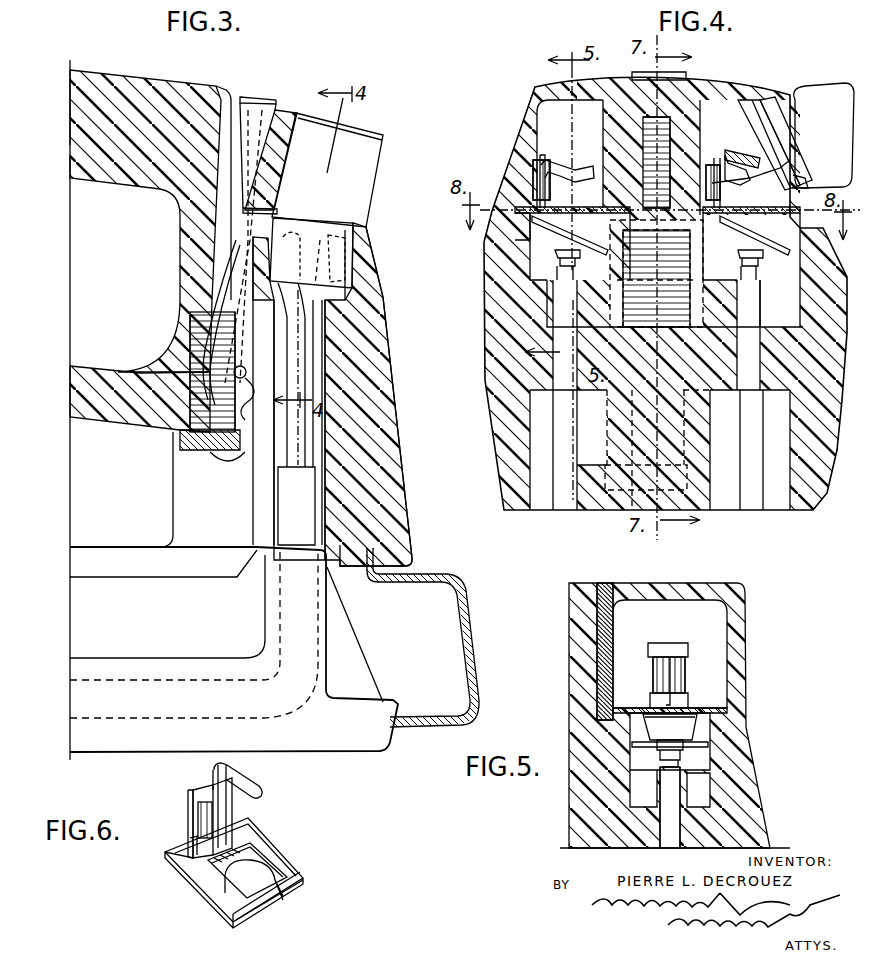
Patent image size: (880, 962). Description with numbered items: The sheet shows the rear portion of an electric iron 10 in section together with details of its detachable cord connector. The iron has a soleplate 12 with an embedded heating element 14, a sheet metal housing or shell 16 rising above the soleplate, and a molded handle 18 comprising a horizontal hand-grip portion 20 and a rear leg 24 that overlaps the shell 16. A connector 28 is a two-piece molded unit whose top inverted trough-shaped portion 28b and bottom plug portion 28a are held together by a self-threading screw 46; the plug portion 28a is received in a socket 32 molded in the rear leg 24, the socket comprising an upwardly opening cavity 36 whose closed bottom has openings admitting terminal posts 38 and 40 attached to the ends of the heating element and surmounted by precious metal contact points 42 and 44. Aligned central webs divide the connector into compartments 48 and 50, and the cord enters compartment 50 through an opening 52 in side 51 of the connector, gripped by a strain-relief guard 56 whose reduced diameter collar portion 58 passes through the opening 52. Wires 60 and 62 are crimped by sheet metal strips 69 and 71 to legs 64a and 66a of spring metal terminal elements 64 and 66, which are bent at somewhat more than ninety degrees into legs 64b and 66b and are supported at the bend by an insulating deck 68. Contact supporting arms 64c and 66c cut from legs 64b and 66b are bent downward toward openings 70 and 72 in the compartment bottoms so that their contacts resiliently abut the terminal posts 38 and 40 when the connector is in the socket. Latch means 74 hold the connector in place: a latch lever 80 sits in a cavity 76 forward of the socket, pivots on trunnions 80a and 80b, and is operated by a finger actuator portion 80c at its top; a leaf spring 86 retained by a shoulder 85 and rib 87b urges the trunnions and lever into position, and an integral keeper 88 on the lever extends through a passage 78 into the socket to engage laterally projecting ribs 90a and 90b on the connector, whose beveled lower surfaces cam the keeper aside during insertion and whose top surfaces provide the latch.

In FIG. 3, the electric iron 10 is at (152, 58).
In FIG. 4, the electric iron 10 is at (474, 379).
In FIG. 3, the soleplate 12 is at (98, 730).
In FIG. 3, the heating element 14 is at (163, 678).
In FIG. 3, the housing or shell 16 is at (462, 625).
In FIG. 3, the handle 18 is at (89, 70).
In FIG. 4, the handle 18 is at (490, 437).
In FIG. 5, the handle 18 is at (753, 772).
In FIG. 3, the hand-grip portion 20 is at (137, 176).
In FIG. 3, the rear leg 24 is at (385, 333).
In FIG. 3, the connector 28 is at (380, 137).
In FIG. 4, the connector 28 is at (738, 95).
In FIG. 5, the connector 28 is at (742, 645).
In FIG. 3, the plug portion 28a is at (345, 238).
In FIG. 4, the plug portion 28a is at (520, 306).
In FIG. 5, the plug portion 28a is at (625, 791).
In FIG. 3, the top inverted trough-shaped portion 28b is at (368, 180).
In FIG. 4, the top inverted trough-shaped portion 28b is at (530, 103).
In FIG. 5, the top inverted trough-shaped portion 28b is at (738, 595).
In FIG. 3, the socket 32 is at (303, 102).
In FIG. 5, the socket 32 is at (607, 592).
In FIG. 3, the cavity 36 is at (357, 290).
In FIG. 4, the cavity 36 is at (500, 340).
In FIG. 5, the cavity 36 is at (752, 800).
In FIG. 4, the terminal post 38 is at (565, 495).
In FIG. 5, the terminal post 38 is at (660, 838).
In FIG. 3, the terminal post 40 is at (292, 457).
In FIG. 4, the terminal post 40 is at (763, 495).
In FIG. 4, the precious metal contact point 42 is at (556, 270).
In FIG. 5, the precious metal contact point 42 is at (660, 764).
In FIG. 4, the precious metal contact point 44 is at (731, 315).
In FIG. 4, the self-threading screw 46 is at (690, 100).
In FIG. 4, the compartment 48 is at (540, 108).
In FIG. 5, the compartment 48 is at (672, 598).
In FIG. 4, the compartment 50 is at (763, 105).
In FIG. 4, the side 51 is at (785, 100).
In FIG. 4, the opening 52 is at (790, 105).
In FIG. 4, the guard 56 is at (820, 120).
In FIG. 4, the collar portion 58 is at (805, 178).
In FIG. 4, the electrical wire 60 is at (722, 153).
In FIG. 4, the electrical wire 62 is at (580, 166).
In FIG. 5, the electrical wire 62 is at (672, 648).
In FIG. 6, the electrical wire 62 is at (260, 790).
In FIG. 4, the terminal element 64 is at (748, 243).
In FIG. 4, the leg 64a is at (712, 158).
In FIG. 4, the leg 64b is at (757, 246).
In FIG. 4, the contact supporting arm 64c is at (740, 262).
In FIG. 4, the terminal element 66 is at (574, 200).
In FIG. 5, the terminal element 66 is at (690, 700).
In FIG. 6, the terminal element 66 is at (205, 870).
In FIG. 4, the leg 66a is at (545, 158).
In FIG. 5, the leg 66a is at (640, 649).
In FIG. 6, the leg 66a is at (192, 808).
In FIG. 4, the leg 66b is at (575, 237).
In FIG. 5, the leg 66b is at (700, 730).
In FIG. 6, the leg 66b is at (268, 858).
In FIG. 4, the contact supporting arm 66c is at (515, 245).
In FIG. 5, the contact supporting arm 66c is at (640, 742).
In FIG. 6, the contact supporting arm 66c is at (268, 878).
In FIG. 4, the insulating deck 68 is at (612, 208).
In FIG. 5, the insulating deck 68 is at (728, 708).
In FIG. 4, the strip of sheet metal 69 is at (762, 163).
In FIG. 4, the opening 70 is at (740, 385).
In FIG. 4, the strip of sheet metal 71 is at (533, 180).
In FIG. 5, the strip of sheet metal 71 is at (653, 681).
In FIG. 6, the strip of sheet metal 71 is at (199, 820).
In FIG. 4, the opening 72 is at (500, 286).
In FIG. 5, the opening 72 is at (600, 823).
In FIG. 3, the latch means 74 is at (254, 91).
In FIG. 4, the latch means 74 is at (636, 66).
In FIG. 3, the cavity 76 is at (222, 90).
In FIG. 3, the passage 78 is at (245, 213).
In FIG. 3, the latch lever 80 is at (230, 226).
In FIG. 4, the latch lever 80 is at (608, 426).
In FIG. 4, the trunnion 80a is at (712, 475).
In FIG. 3, the trunnion 80b is at (190, 340).
In FIG. 4, the trunnion 80b is at (610, 478).
In FIG. 3, the finger actuator portion 80c is at (265, 100).
In FIG. 4, the finger actuator portion 80c is at (660, 95).
In FIG. 3, the shoulder 85 is at (240, 452).
In FIG. 3, the leaf spring 86 is at (204, 277).
In FIG. 3, the rib 87b is at (205, 452).
In FIG. 3, the keeper 88 is at (300, 226).
In FIG. 3, the rib 90a is at (299, 258).
In FIG. 3, the rib 90b is at (327, 258).
In FIG. 4, the rib 90b is at (650, 275).